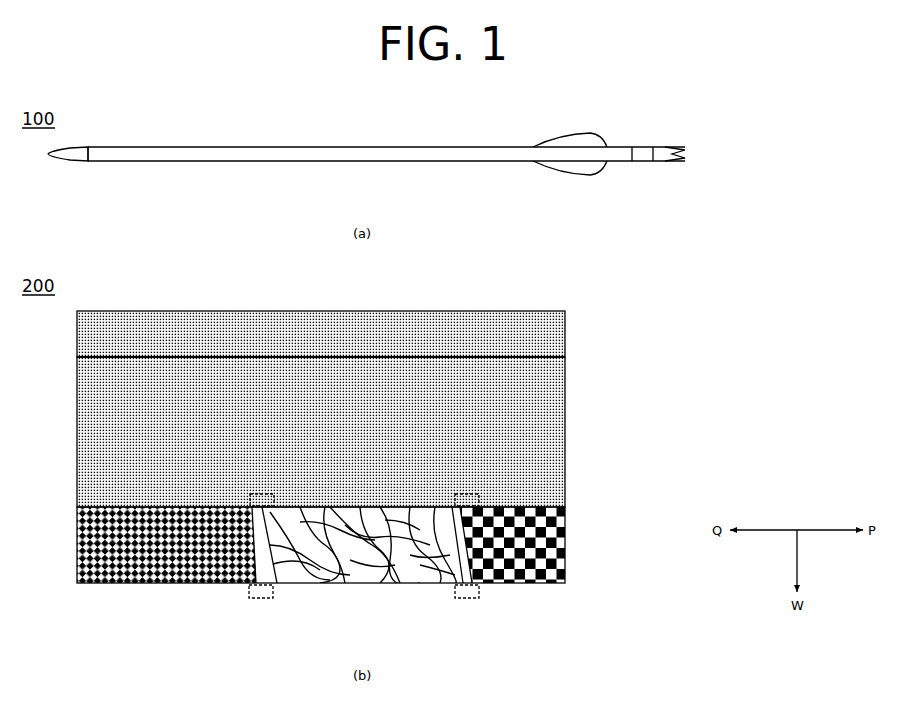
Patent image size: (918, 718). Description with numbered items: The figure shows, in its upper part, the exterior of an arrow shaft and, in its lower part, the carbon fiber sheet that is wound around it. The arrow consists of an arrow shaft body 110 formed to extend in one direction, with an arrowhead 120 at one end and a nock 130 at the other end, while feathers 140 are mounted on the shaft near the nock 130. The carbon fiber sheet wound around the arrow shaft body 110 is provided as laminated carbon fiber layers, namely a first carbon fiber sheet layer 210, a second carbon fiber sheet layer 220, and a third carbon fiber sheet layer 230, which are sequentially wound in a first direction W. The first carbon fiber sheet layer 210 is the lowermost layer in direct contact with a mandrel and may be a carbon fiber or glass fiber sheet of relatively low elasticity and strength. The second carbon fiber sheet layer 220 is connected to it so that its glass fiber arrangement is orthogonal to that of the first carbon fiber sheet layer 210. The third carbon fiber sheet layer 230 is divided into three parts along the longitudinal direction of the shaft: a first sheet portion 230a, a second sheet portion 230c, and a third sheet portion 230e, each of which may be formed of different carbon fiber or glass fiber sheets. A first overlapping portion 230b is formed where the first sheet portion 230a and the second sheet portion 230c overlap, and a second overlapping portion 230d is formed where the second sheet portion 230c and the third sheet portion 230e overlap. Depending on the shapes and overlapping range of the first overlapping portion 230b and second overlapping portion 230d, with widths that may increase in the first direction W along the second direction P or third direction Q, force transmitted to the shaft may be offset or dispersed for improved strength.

The arrow shaft body 110 is at (215, 156).
The arrowhead 120 is at (72, 157).
The nock 130 is at (663, 165).
The feathers 140 is at (593, 165).
The first carbon fiber sheet layer 210 is at (567, 332).
The second carbon fiber sheet layer 220 is at (567, 431).
The third carbon fiber sheet layer 230 is at (357, 573).
The first sheet portion 230a is at (166, 584).
The first overlapping portion 230b is at (256, 590).
The second sheet portion 230c is at (335, 584).
The second overlapping portion 230d is at (464, 598).
The third sheet portion 230e is at (518, 584).